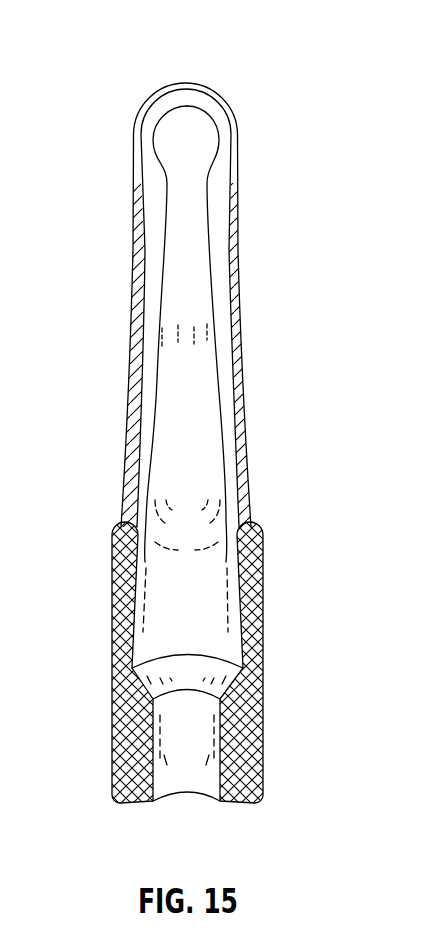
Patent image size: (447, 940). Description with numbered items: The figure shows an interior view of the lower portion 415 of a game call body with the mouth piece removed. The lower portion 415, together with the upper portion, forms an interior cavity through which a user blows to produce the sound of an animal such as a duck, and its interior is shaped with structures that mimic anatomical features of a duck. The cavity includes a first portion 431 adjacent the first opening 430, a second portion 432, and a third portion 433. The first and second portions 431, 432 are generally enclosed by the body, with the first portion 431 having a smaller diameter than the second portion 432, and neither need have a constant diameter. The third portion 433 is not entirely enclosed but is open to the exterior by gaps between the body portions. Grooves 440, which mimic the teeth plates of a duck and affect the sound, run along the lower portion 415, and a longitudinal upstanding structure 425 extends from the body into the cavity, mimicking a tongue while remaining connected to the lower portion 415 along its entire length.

The lower portion 415 is at (121, 68).
The longitudinal upstanding structure 425 is at (192, 262).
The first opening 430 is at (190, 790).
The first portion 431 is at (209, 740).
The second portion 432 is at (211, 482).
The third portion 433 is at (211, 320).
The grooves 440 is at (133, 300).